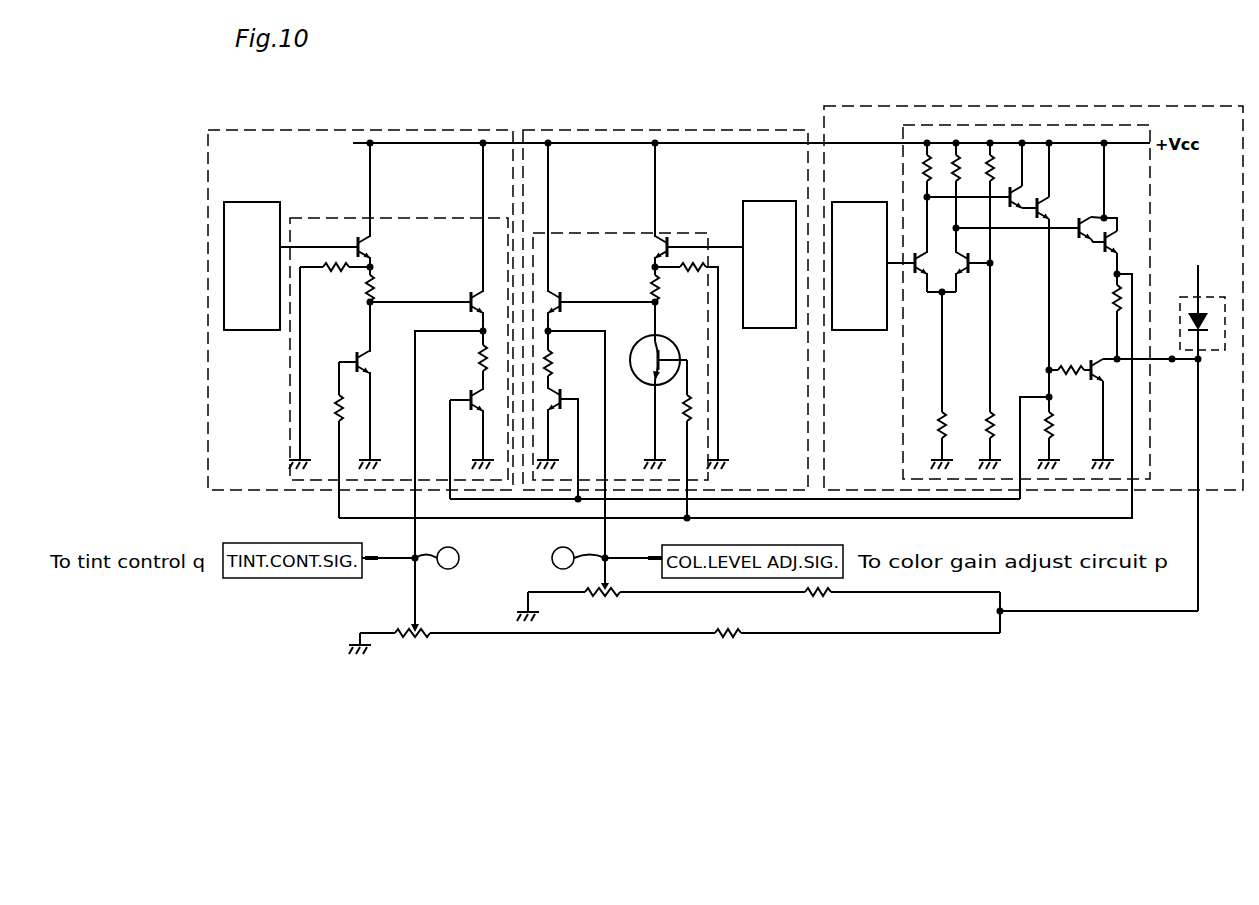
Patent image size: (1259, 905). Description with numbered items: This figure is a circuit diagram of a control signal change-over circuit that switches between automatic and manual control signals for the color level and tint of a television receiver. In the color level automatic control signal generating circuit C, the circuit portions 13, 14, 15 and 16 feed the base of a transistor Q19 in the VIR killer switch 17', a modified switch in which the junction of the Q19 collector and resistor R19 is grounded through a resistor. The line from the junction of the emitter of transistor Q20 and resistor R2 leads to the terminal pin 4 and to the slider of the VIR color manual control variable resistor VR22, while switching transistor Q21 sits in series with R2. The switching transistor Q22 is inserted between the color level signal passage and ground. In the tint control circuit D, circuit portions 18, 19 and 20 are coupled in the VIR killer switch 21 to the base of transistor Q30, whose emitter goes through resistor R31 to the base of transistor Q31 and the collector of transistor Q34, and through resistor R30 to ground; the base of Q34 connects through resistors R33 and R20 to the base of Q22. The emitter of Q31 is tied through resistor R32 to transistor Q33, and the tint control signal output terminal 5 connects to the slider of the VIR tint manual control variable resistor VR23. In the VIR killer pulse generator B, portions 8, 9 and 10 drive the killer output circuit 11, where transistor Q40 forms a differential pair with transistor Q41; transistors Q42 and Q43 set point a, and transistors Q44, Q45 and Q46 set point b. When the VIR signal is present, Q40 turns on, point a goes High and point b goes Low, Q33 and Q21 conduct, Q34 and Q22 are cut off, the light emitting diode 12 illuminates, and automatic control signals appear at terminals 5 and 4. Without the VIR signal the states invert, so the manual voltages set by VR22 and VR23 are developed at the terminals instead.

The tint control circuit D is at (375, 130).
The color level automatic control signal generating circuit C is at (672, 130).
The VIR killer pulse generator B is at (1048, 106).
The killer output circuit 11 is at (922, 125).
The VIR indicator or light emitting diode 12 is at (1221, 352).
The VIR killer switch 21 is at (310, 218).
The VIR killer switch 17' is at (626, 343).
The O chroma clamp circuit 18 is at (251, 300).
The 0 level comparator 19 is at (251, 300).
The store 20 is at (255, 330).
The pedestal clamp circuit 13 is at (767, 300).
The O chroma clamp circuit 14 is at (767, 300).
The comparator 15 is at (767, 300).
The store 16 is at (765, 328).
The VIR chroma gate pulse generator 8 is at (856, 290).
The VIR killer pulse generator 9 is at (856, 290).
The VIR killer detector 10 is at (857, 330).
The transistor Q30 is at (362, 246).
The transistor Q31 is at (469, 290).
The transistor Q33 is at (470, 391).
The transistor Q34 is at (357, 352).
The resistor R30 is at (332, 270).
The resistor R31 is at (373, 293).
The resistor R32 is at (480, 358).
The resistor R33 is at (339, 410).
The transistor Q19 is at (664, 248).
The transistor Q20 is at (578, 284).
The switching transistor Q21 is at (565, 410).
The switching transistor Q22 is at (655, 364).
The resistor R19 is at (653, 286).
The resistor R2 is at (550, 362).
The resistor R20 is at (688, 406).
The transistor Q40 is at (920, 258).
The transistor Q41 is at (965, 281).
The transistor Q42 is at (1012, 193).
The transistor Q43 is at (1039, 211).
The transistor Q44 is at (1086, 247).
The transistor Q45 is at (1109, 253).
The transistor Q46 is at (1094, 384).
The point a is at (1039, 373).
The point b is at (1109, 272).
The VIR color manual control variable resistor VR22 is at (604, 598).
The VIR tint manual control variable resistor VR23 is at (414, 640).
The terminal pin 4 is at (578, 558).
The tint control signal output terminal 5 is at (437, 558).